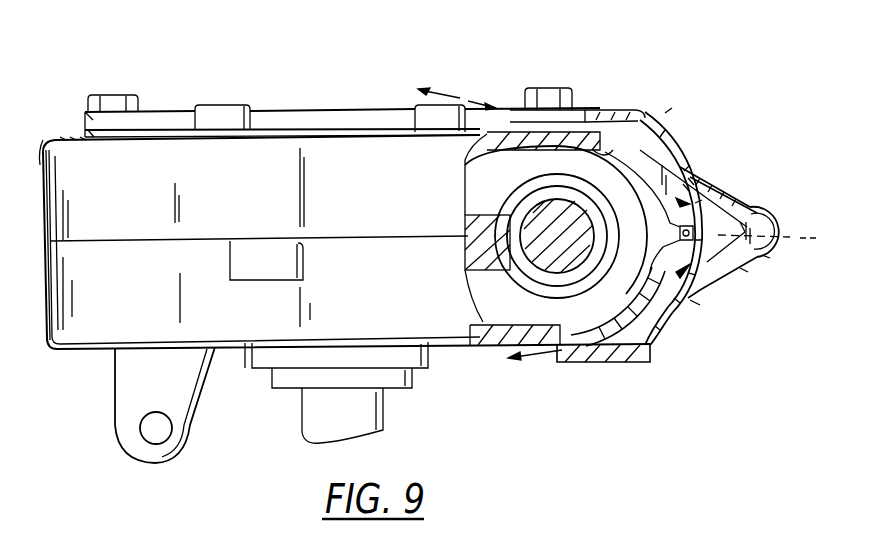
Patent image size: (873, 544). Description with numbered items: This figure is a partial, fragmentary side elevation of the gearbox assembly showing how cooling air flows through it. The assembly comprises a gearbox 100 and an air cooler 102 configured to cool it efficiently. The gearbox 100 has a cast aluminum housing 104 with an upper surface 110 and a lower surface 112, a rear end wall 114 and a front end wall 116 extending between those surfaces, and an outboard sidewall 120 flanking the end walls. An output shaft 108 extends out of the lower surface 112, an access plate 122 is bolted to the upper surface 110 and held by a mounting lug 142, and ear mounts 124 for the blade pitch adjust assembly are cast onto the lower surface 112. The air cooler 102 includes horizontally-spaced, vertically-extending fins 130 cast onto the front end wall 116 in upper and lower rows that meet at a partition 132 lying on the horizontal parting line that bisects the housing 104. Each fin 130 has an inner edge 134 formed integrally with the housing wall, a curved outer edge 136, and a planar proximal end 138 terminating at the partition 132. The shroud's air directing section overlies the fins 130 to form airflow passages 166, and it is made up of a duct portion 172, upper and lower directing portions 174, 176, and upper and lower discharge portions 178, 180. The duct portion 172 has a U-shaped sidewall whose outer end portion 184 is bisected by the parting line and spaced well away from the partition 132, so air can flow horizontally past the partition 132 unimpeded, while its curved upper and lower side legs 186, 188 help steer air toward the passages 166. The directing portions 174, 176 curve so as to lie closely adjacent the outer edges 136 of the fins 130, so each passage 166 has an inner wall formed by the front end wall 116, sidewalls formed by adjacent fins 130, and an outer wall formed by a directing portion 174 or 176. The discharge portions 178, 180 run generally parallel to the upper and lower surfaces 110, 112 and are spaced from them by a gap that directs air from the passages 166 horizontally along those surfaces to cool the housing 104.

The gearbox 100 is at (212, 106).
The air cooler 102 is at (664, 115).
The housing 104 is at (49, 340).
The output shaft 108 is at (384, 430).
The upper surface 110 is at (70, 137).
The lower surface 112 is at (238, 352).
The rear end wall 114 is at (40, 165).
The front end wall 116 is at (651, 163).
The outboard sidewall 120 is at (273, 208).
The access plate 122 is at (287, 111).
The ear mounts 124 is at (115, 423).
The fins 130 is at (655, 140).
The partition 132 is at (758, 215).
The inner edge 134 is at (602, 147).
The outer edge 136 is at (701, 277).
The proximal end 138 is at (655, 125).
The mounting lug 142 is at (220, 121).
The airflow passages 166 is at (712, 165).
The duct portion 172 is at (767, 235).
The upper directing portion 174 is at (655, 121).
The lower directing portion 176 is at (694, 306).
The upper discharge portion 178 is at (582, 118).
The lower discharge portion 180 is at (612, 364).
The outer end portion 184 is at (771, 257).
The upper side leg 186 is at (749, 206).
The lower side leg 188 is at (746, 270).